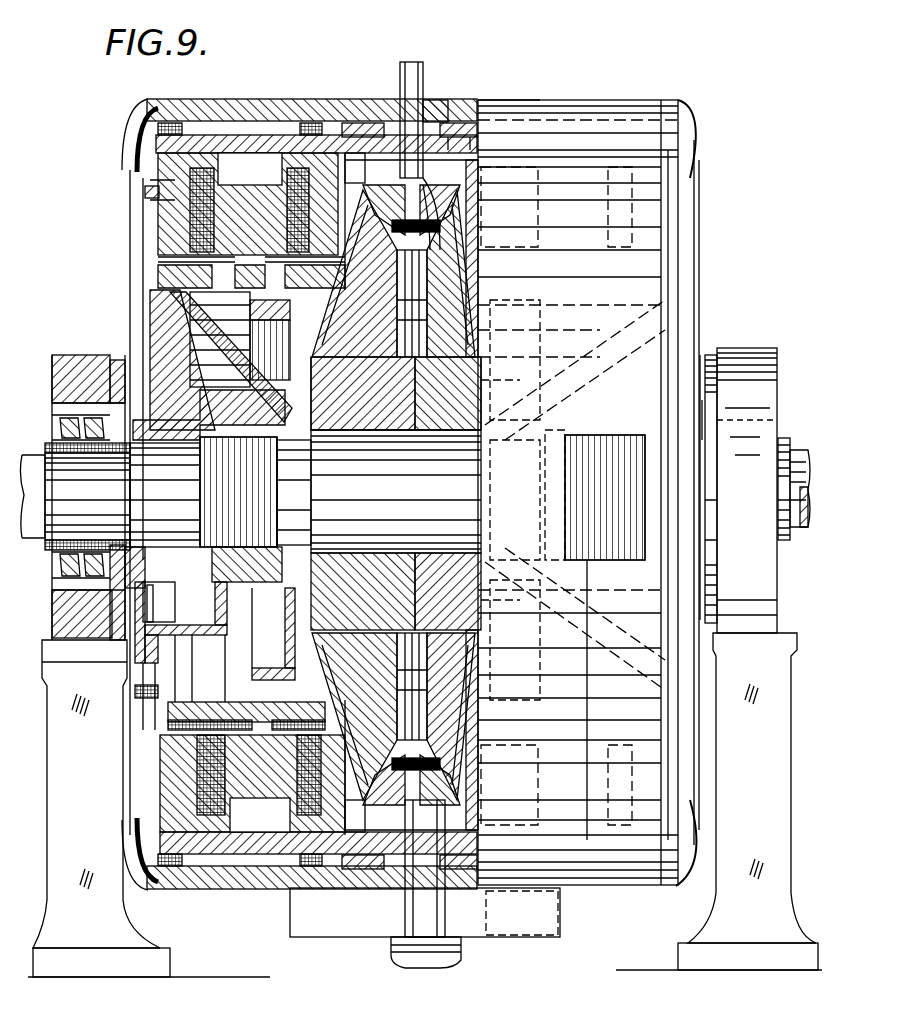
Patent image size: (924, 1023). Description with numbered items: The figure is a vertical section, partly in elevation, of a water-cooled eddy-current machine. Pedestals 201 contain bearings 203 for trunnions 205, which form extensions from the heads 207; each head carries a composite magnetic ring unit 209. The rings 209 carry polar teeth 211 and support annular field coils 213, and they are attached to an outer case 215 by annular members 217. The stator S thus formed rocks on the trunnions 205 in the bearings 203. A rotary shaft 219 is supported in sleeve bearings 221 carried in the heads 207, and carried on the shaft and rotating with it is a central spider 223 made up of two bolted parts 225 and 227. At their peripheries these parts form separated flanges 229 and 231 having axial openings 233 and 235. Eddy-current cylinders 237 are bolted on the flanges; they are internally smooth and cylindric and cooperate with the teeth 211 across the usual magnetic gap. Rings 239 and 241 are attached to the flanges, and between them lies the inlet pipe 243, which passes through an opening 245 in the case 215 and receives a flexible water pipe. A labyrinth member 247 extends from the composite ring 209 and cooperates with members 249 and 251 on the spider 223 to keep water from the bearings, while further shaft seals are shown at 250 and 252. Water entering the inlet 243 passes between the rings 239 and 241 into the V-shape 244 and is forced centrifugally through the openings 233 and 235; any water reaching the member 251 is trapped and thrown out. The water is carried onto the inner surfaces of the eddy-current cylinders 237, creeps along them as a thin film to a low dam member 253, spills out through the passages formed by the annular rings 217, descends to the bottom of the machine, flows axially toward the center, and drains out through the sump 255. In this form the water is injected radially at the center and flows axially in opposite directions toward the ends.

The pedestals 201 is at (96, 795).
The bearings 203 is at (60, 560).
The trunnions 205 is at (145, 378).
The heads 207 is at (162, 302).
The composite magnetic ring units 209 is at (180, 230).
The polar teeth 211 is at (240, 150).
The annular field coils 213 is at (190, 190).
The outer case 215 is at (310, 118).
The annular members 217 is at (140, 125).
The rotary shaft 219 is at (396, 491).
The sleeve bearings 221 is at (190, 530).
The central spider 223 is at (432, 422).
The bolted part 225 is at (355, 422).
The bolted part 227 is at (462, 410).
The flange 229 is at (360, 122).
The flange 231 is at (457, 120).
The axial opening 233 is at (300, 115).
The axial opening 235 is at (475, 185).
The eddy-current cylinders 237 is at (270, 100).
The ring 239 is at (355, 160).
The ring 241 is at (435, 180).
The inlet pipe 243 is at (420, 72).
The V-shape 244 is at (425, 226).
The opening 245 is at (430, 105).
The labyrinth member 247 is at (300, 615).
The member 249 is at (318, 440).
The shaft seal 250 is at (60, 432).
The member 251 is at (358, 300).
The shaft seal 252 is at (215, 400).
The low dam member 253 is at (148, 170).
The sump 255 is at (405, 958).
The stator S is at (500, 100).